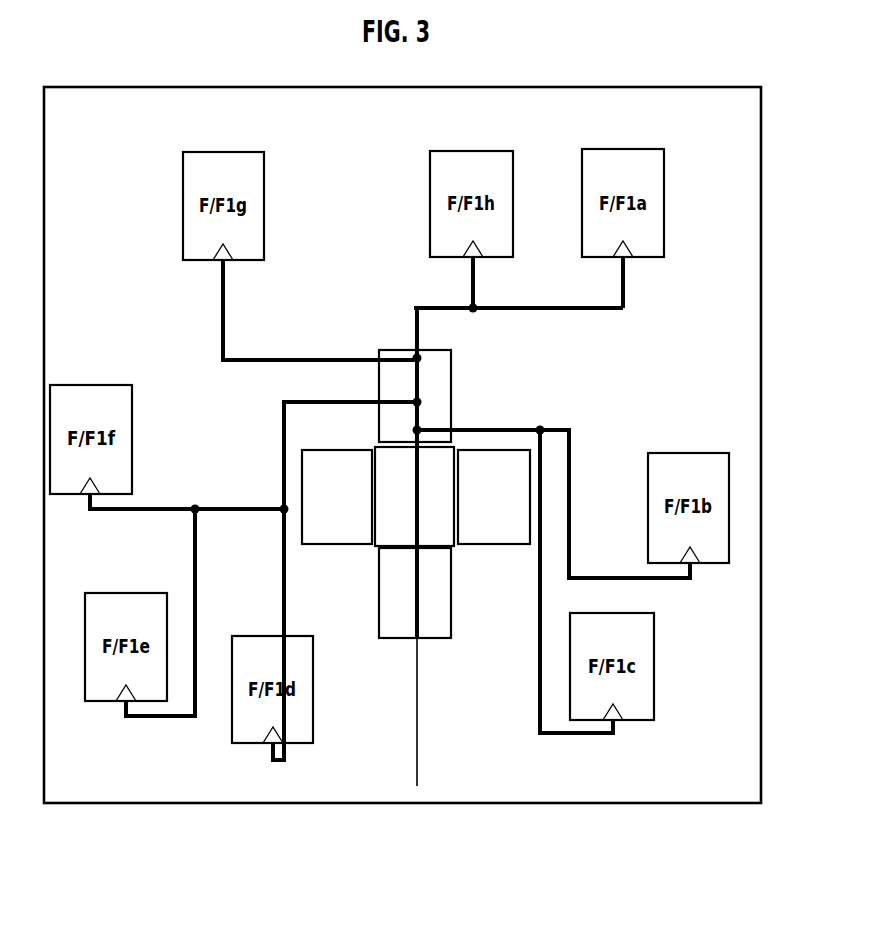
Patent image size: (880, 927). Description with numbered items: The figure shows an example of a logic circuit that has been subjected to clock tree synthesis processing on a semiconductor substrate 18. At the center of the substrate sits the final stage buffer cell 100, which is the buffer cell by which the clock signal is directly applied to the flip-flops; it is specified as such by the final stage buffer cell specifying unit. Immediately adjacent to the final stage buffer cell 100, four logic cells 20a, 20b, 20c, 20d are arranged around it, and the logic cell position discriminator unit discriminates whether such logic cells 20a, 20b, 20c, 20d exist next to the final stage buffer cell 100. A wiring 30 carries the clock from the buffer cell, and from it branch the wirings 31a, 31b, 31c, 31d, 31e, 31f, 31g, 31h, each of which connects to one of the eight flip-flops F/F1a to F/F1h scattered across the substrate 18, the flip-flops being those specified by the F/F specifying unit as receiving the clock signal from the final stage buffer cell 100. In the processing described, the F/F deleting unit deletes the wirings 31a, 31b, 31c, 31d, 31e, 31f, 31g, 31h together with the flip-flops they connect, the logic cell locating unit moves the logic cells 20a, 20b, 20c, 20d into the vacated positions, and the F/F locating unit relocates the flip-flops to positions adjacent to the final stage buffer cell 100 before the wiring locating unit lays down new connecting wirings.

The semiconductor substrate 18 is at (455, 805).
The logic cell 20a is at (452, 396).
The logic cell 20b is at (497, 547).
The logic cell 20c is at (453, 626).
The logic cell 20d is at (336, 547).
The final stage buffer cell 100 is at (386, 451).
The wiring 30 is at (420, 742).
The wiring 31a is at (626, 296).
The wiring 31b is at (612, 574).
The wiring 31c is at (566, 736).
The wiring 31d is at (288, 626).
The wiring 31e is at (190, 565).
The wiring 31f is at (172, 504).
The wiring 31g is at (225, 305).
The wiring 31h is at (470, 284).